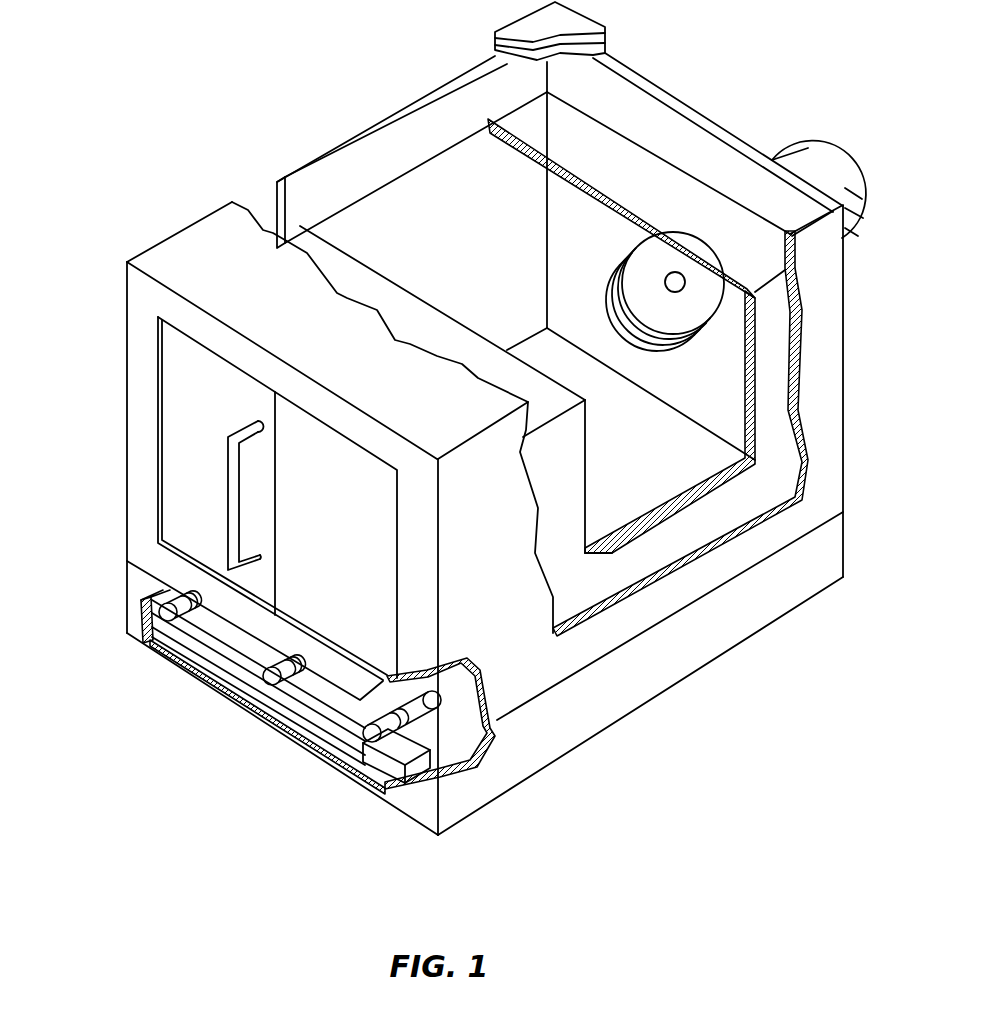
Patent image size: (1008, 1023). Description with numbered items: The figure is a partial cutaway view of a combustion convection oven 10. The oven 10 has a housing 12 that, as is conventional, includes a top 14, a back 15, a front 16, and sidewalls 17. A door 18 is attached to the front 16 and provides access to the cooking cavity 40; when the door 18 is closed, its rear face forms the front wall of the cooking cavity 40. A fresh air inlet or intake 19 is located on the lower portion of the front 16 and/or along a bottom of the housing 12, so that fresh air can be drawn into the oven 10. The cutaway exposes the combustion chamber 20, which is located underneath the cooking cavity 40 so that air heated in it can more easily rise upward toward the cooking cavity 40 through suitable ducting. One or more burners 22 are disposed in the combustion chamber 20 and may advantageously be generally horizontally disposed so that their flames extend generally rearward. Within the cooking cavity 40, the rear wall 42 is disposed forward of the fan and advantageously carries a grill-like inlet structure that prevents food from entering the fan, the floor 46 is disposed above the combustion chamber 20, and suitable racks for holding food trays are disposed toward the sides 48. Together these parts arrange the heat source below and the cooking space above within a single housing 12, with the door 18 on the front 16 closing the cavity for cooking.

The combustion convection oven 10 is at (236, 88).
The housing 12 is at (213, 228).
The top 14 is at (190, 258).
The back 15 is at (688, 106).
The front 16 is at (137, 522).
The sidewalls 17 is at (408, 104).
The door 18 is at (193, 452).
The fresh air inlet or intake 19 is at (208, 640).
The combustion chamber 20 is at (462, 748).
The burners 22 is at (165, 614).
The cooking cavity 40 is at (437, 216).
The rear wall 42 is at (583, 222).
The floor 46 is at (639, 493).
The sides 48 is at (378, 232).